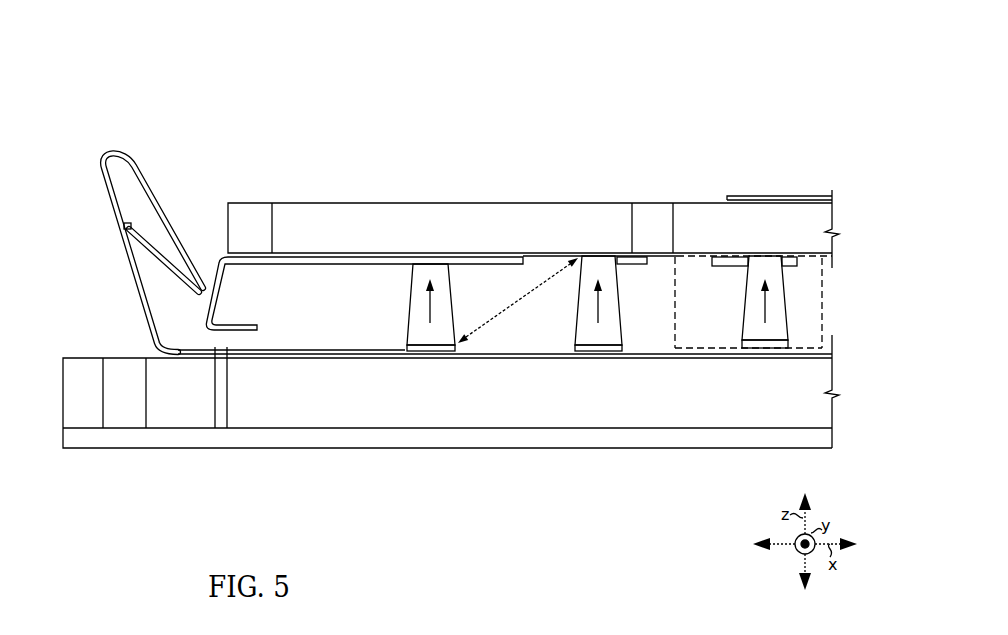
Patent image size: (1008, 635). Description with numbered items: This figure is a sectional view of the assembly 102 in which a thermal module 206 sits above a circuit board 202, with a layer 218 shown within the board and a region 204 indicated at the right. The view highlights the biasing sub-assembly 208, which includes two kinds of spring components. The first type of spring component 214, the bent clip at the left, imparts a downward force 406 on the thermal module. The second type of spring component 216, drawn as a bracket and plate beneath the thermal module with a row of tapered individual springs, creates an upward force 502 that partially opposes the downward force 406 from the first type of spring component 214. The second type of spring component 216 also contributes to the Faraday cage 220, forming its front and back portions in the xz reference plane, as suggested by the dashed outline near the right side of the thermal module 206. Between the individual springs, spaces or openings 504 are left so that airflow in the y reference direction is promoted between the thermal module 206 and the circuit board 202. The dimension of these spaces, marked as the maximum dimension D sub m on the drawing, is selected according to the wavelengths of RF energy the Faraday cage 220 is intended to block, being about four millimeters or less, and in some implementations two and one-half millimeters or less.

The SCCBA (server computing component board assembly) 102 is at (207, 40).
The first type of spring component 214 is at (130, 143).
The biasing sub-assembly 208 is at (132, 336).
The downward force 406 is at (193, 322).
The thermal module 206 is at (527, 235).
The Faraday cage 220 is at (740, 169).
The second type of spring component 216 is at (399, 334).
The upward force 502 is at (599, 312).
The spaces or openings 504 is at (494, 348).
The component 204 is at (822, 298).
The circuit board layer 218 is at (273, 427).
The circuit board 202 is at (607, 416).